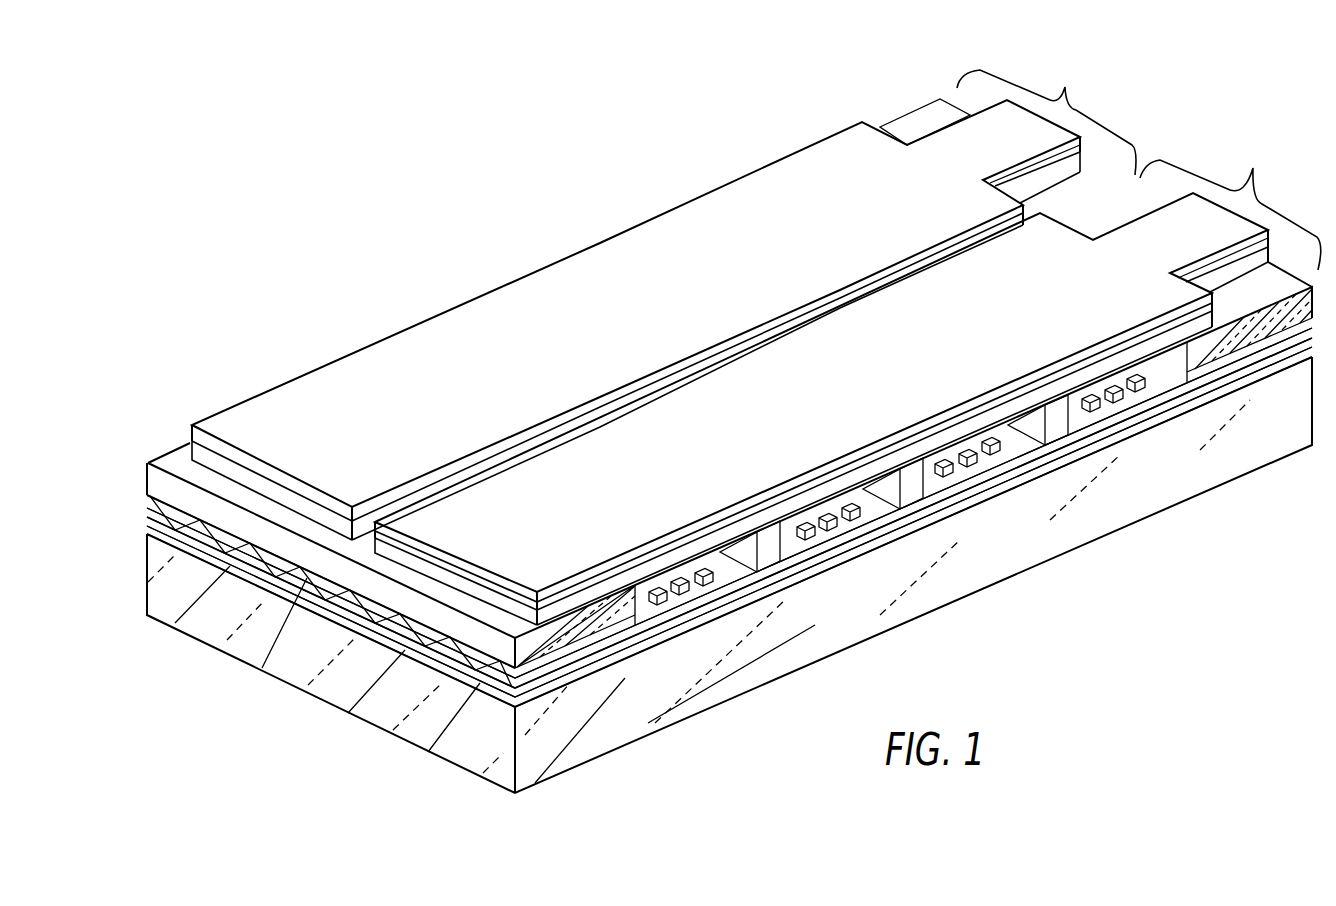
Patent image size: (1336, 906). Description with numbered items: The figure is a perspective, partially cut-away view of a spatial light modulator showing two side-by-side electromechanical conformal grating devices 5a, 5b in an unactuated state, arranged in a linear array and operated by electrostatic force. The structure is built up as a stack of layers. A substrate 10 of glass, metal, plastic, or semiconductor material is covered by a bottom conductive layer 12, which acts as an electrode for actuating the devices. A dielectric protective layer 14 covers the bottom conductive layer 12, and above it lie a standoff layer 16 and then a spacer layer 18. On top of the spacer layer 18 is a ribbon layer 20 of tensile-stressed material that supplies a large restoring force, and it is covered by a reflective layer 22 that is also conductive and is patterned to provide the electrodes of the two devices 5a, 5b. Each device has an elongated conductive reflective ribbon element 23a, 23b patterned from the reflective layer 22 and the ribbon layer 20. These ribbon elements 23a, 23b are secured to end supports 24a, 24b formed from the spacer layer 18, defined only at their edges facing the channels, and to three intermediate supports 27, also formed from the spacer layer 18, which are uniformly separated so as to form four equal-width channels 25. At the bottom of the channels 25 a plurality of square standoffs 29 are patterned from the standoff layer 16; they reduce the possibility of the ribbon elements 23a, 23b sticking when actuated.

The conformal grating device 5a is at (1046, 111).
The conformal grating device 5b is at (1230, 202).
The substrate 10 is at (383, 710).
The bottom conductive layer 12 is at (200, 535).
The dielectric protective layer 14 is at (235, 575).
The standoff layer 16 is at (270, 587).
The spacer layer 18 is at (450, 688).
The ribbon layer 20 is at (196, 455).
The reflective layer 22 is at (212, 442).
The conductive reflective ribbon element 23a is at (787, 252).
The conductive reflective ribbon element 23b is at (928, 376).
The end support 24a is at (1263, 327).
The end support 24b is at (590, 623).
The channel 25 is at (941, 556).
The intermediate support 27 is at (765, 548).
The square standoff 29 is at (993, 458).